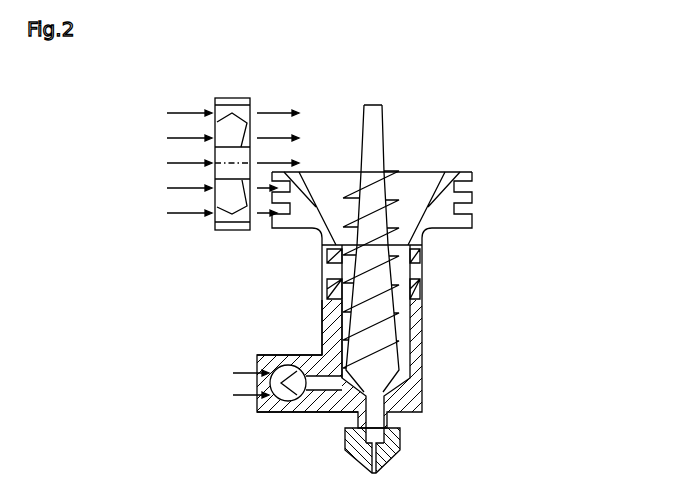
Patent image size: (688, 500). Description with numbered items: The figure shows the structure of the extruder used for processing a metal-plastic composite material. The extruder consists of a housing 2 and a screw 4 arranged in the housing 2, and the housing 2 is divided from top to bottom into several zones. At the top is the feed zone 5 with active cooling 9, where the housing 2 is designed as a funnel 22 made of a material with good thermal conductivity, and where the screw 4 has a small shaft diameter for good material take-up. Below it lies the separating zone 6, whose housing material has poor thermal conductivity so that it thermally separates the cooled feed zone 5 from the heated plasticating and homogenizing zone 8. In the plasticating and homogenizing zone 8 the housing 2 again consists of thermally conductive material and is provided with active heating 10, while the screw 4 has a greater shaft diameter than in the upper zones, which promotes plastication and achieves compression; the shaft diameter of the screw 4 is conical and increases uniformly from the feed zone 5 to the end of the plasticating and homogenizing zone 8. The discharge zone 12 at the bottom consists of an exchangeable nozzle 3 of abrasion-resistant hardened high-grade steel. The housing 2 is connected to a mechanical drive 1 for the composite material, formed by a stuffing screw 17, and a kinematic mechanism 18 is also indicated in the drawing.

The mechanical drive 1 is at (461, 248).
The stuffing screw 17 is at (400, 315).
The housing 2 is at (373, 355).
The nozzle 3 is at (400, 443).
The screw 4 is at (415, 269).
The feed zone 5 is at (367, 193).
The separating zone 6 is at (335, 270).
The plasticating and homogenizing zone 8 is at (327, 333).
The cooling 9 is at (224, 96).
The heating 10 is at (233, 373).
The discharge zone 12 is at (357, 412).
The kinematic mechanism 18 is at (324, 382).
The funnel 22 is at (448, 208).